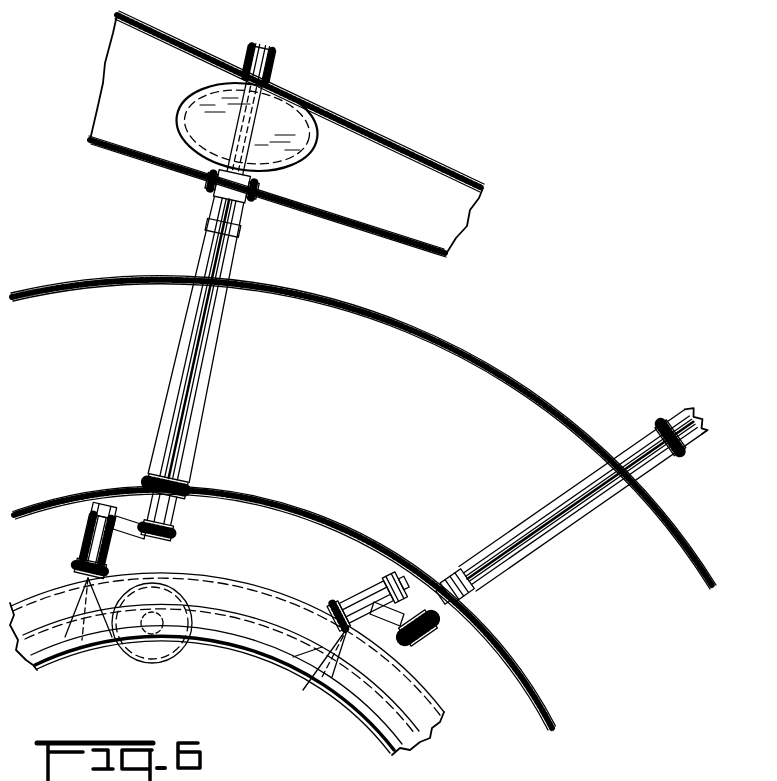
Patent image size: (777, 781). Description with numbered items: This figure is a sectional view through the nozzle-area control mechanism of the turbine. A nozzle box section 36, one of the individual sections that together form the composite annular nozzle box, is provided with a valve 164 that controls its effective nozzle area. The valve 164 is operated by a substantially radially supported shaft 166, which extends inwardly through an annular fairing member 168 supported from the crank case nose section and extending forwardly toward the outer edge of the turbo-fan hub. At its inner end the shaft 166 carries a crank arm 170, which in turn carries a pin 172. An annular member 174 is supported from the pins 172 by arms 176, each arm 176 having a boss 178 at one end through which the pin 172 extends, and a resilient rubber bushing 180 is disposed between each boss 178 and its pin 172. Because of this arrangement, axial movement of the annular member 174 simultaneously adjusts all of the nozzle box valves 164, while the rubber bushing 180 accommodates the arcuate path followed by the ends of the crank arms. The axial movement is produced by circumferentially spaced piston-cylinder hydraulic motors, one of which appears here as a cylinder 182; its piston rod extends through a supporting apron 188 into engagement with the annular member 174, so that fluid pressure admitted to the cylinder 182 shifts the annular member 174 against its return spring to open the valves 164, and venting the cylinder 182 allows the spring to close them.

The nozzle box section 36 is at (198, 50).
The valve 164 is at (285, 116).
The shaft 166 is at (236, 253).
The annular fairing member 168 is at (298, 510).
The crank arm 170 is at (138, 536).
The pin 172 is at (82, 574).
The annular member 174 is at (268, 665).
The arm 176 is at (62, 655).
The boss 178 is at (118, 550).
The resilient rubber bushing 180 is at (86, 527).
The cylinder 182 is at (148, 668).
The supporting apron 188 is at (426, 702).